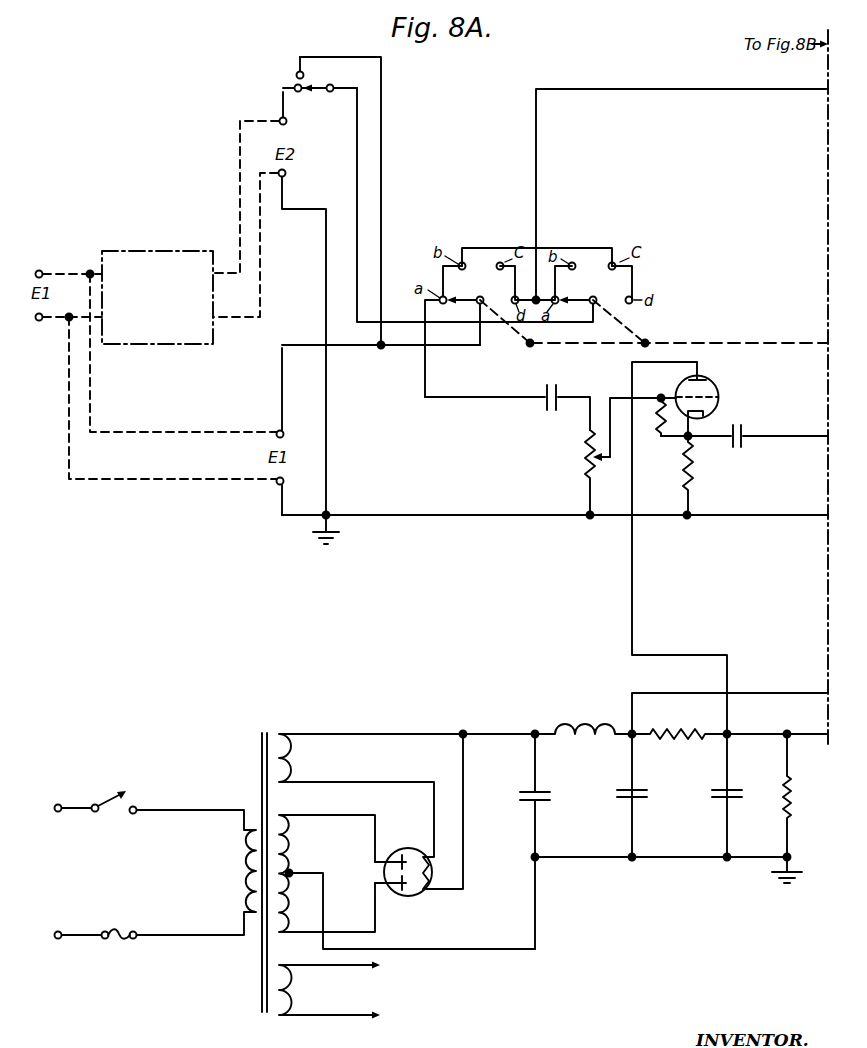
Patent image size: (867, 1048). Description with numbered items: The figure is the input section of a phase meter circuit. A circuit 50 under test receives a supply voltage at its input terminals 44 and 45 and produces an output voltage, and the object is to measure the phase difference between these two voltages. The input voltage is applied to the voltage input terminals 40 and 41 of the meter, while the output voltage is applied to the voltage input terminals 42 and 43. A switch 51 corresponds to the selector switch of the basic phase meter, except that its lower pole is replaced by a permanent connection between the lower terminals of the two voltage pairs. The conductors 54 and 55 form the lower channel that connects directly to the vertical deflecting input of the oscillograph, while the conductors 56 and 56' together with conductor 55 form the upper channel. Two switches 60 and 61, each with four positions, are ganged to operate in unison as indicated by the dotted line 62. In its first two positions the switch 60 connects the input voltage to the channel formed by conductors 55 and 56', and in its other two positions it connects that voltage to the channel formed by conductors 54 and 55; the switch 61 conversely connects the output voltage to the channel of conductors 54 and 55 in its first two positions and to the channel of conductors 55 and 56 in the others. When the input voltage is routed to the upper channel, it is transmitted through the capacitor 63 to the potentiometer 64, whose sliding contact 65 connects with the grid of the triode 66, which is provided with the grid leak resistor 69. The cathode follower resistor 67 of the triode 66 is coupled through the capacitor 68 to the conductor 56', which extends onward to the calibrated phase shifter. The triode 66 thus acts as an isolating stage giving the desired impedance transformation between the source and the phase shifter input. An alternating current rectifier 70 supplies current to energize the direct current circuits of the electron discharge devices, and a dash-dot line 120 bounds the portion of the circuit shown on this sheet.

The voltage input terminal 40 is at (284, 484).
The voltage input terminal 41 is at (284, 432).
The voltage input terminal 42 is at (286, 175).
The voltage input terminal 43 is at (287, 120).
The input terminal of circuit under test 44 is at (41, 324).
The input terminal of circuit under test 45 is at (40, 270).
The circuit under test 50 is at (150, 250).
The switch 51 is at (318, 87).
The conductor 54 is at (779, 90).
The conductor 55 is at (781, 518).
The conductor 56 is at (381, 360).
The conductor 56' is at (744, 428).
The switch 60 is at (463, 299).
The switch 61 is at (572, 299).
The dotted line 62 is at (590, 348).
The capacitor 63 is at (544, 403).
The potentiometer 64 is at (585, 468).
The sliding contact 65 is at (602, 464).
The triode 66 is at (721, 393).
The cathode follower resistor 67 is at (683, 489).
The capacitor 68 is at (742, 450).
The grid leak resistor 69 is at (660, 440).
The alternating current rectifier 70 is at (426, 721).
The linkage 120 is at (757, 343).